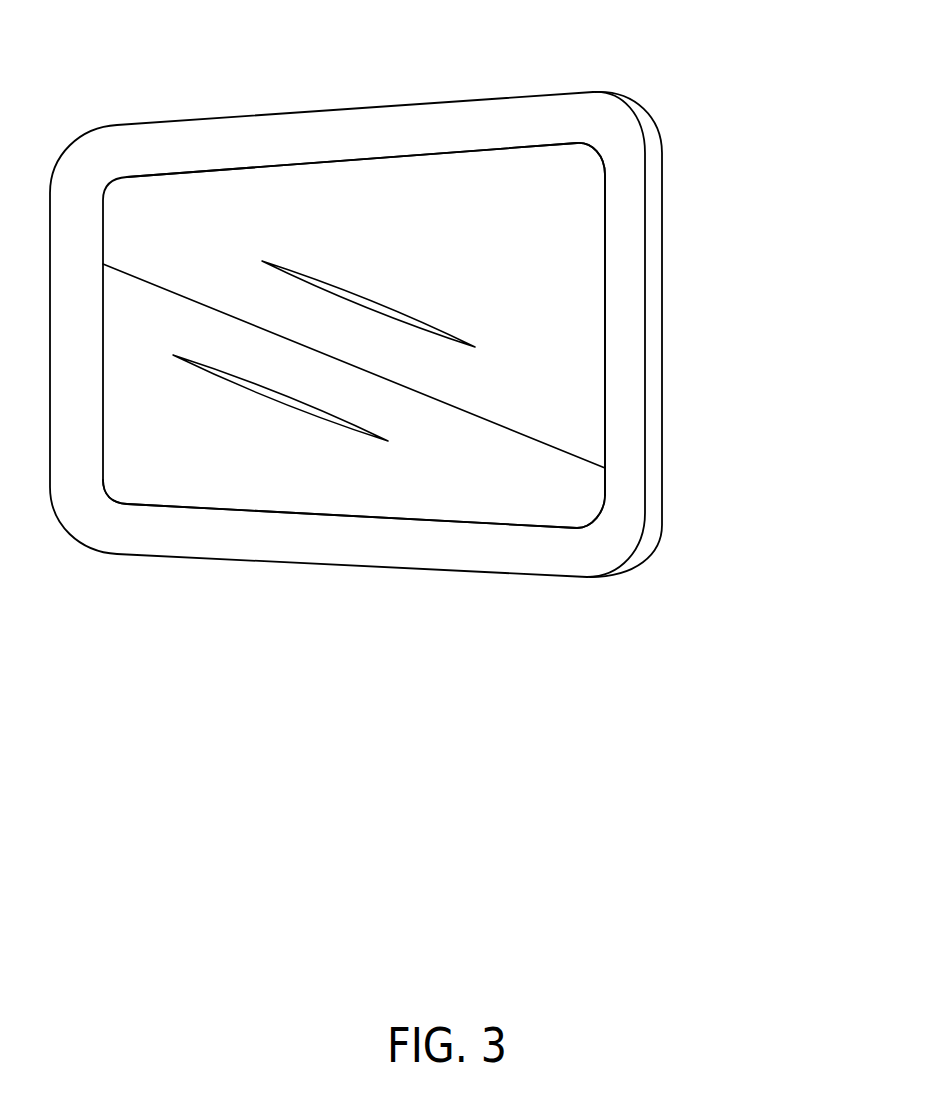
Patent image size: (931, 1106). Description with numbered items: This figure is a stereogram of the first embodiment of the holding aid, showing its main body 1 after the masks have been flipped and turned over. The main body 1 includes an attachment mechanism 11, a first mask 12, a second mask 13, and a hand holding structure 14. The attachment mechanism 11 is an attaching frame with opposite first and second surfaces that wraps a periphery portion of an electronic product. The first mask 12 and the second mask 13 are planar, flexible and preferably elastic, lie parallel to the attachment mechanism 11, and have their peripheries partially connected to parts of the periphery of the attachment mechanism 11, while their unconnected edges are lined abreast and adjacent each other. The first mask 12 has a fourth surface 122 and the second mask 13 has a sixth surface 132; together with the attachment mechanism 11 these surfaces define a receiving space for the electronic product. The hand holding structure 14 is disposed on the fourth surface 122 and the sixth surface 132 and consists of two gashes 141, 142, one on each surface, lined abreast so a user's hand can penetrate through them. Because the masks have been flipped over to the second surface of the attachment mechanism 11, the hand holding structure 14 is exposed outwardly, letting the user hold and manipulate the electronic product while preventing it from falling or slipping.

The main body 1 is at (420, 334).
The attachment mechanism 11 is at (220, 140).
The first mask 12 is at (403, 197).
The fourth surface 122 is at (500, 195).
The second mask 13 is at (287, 483).
The sixth surface 132 is at (432, 497).
The hand holding structure 14 is at (482, 346).
The gash 141 is at (373, 303).
The gash 142 is at (287, 402).